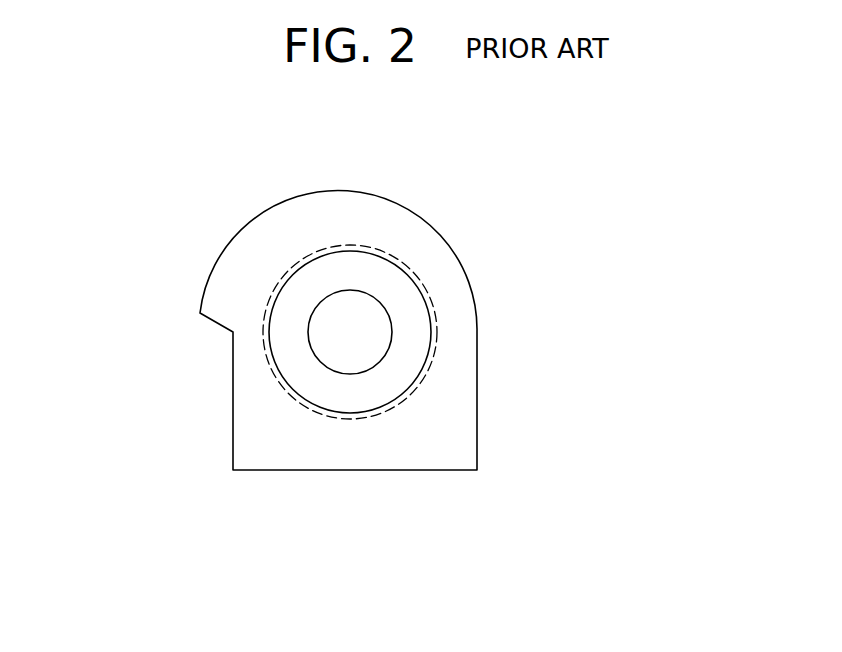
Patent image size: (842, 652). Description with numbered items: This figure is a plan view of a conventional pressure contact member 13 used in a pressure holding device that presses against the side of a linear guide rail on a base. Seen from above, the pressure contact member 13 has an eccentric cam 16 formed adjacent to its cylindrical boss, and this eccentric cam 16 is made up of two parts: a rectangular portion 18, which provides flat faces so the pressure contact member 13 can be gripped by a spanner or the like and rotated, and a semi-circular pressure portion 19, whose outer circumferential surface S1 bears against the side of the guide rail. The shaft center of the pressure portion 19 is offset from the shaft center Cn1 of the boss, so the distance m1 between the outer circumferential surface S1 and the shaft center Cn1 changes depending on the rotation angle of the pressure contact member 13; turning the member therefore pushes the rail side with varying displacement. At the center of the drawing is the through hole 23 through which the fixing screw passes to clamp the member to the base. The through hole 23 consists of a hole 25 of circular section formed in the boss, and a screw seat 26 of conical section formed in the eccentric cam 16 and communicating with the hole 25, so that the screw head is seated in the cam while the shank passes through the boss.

The pressure contact member 13 is at (416, 207).
The eccentric cam 16 is at (577, 272).
The rectangular portion 18 is at (467, 336).
The semi-circular pressure portion 19 is at (406, 238).
The through hole 23 is at (313, 533).
The hole 25 is at (341, 352).
The screw seat 26 is at (373, 383).
The outer circumferential surface S1 is at (335, 192).
The distance m1 is at (350, 332).
The shaft center Cn1 is at (350, 332).